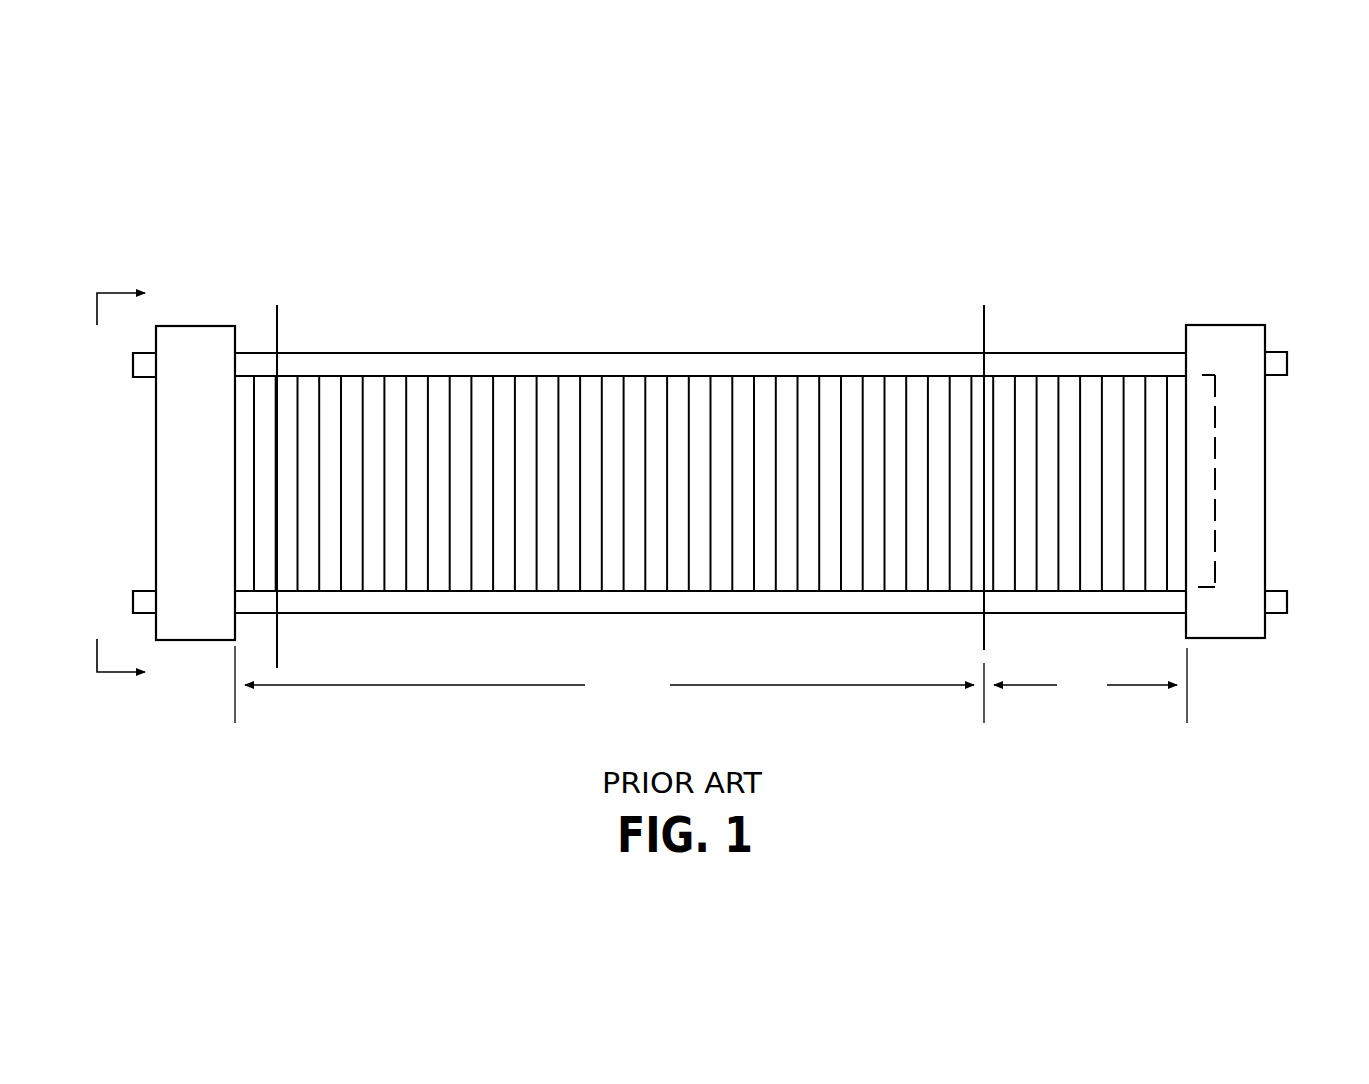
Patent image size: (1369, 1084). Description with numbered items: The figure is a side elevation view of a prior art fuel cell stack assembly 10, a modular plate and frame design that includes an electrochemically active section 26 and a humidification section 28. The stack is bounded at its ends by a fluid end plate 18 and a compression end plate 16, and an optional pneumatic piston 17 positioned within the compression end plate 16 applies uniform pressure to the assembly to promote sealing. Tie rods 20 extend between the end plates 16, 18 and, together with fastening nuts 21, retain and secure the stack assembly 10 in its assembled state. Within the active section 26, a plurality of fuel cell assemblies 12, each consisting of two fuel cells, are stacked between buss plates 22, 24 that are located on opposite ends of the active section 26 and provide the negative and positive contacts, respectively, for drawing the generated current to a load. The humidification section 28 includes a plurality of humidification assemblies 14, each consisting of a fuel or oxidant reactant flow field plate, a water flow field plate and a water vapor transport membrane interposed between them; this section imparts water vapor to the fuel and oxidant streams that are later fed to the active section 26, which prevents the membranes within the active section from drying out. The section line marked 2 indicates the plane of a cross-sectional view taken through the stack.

The fuel cell stack assembly 10 is at (912, 206).
The fuel cell assemblies 12 is at (510, 388).
The humidification assemblies 14 is at (1127, 390).
The compression end plate 16 is at (1223, 333).
The pneumatic piston 17 is at (1198, 482).
The fluid end plate 18 is at (200, 363).
The tie rods 20 is at (655, 352).
The fastening nuts 21 is at (143, 377).
The buss plate 22 is at (277, 640).
The buss plate 24 is at (984, 640).
The electrochemically active section 26 is at (609, 684).
The humidification section 28 is at (1090, 685).
The section line 2- 2 is at (123, 483).